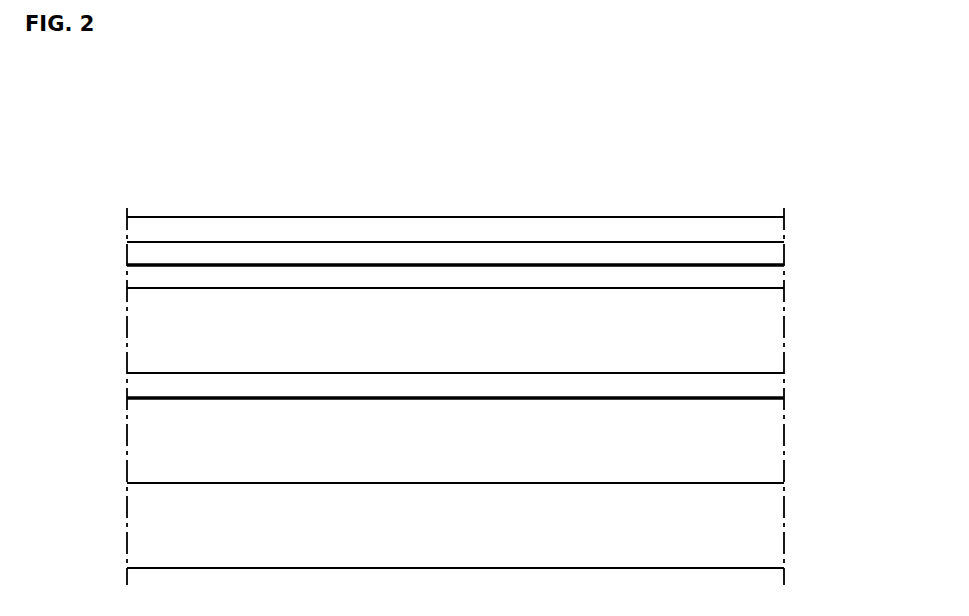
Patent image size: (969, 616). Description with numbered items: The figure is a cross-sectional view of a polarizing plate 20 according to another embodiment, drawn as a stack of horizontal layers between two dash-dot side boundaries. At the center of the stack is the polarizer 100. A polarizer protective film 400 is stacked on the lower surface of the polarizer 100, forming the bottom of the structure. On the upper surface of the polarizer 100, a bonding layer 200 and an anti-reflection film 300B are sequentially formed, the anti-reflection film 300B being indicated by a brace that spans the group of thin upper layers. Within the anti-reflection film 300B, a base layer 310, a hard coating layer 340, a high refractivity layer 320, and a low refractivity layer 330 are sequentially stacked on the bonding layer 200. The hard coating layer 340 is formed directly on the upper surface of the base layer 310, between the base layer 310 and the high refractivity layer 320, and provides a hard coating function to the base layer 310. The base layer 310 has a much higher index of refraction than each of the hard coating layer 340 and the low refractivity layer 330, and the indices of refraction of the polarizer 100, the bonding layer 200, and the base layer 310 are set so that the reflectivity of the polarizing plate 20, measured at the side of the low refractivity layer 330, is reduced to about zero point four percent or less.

The polarizing plate 20 is at (830, 186).
The low refractivity layer 330 is at (137, 238).
The high refractivity layer 320 is at (129, 252).
The hard coating layer 340 is at (137, 278).
The base layer 310 is at (128, 337).
The anti-reflection film 300B is at (792, 215).
The bonding layer 200 is at (775, 384).
The polarizer 100 is at (775, 438).
The polarizer protective film 400 is at (775, 529).